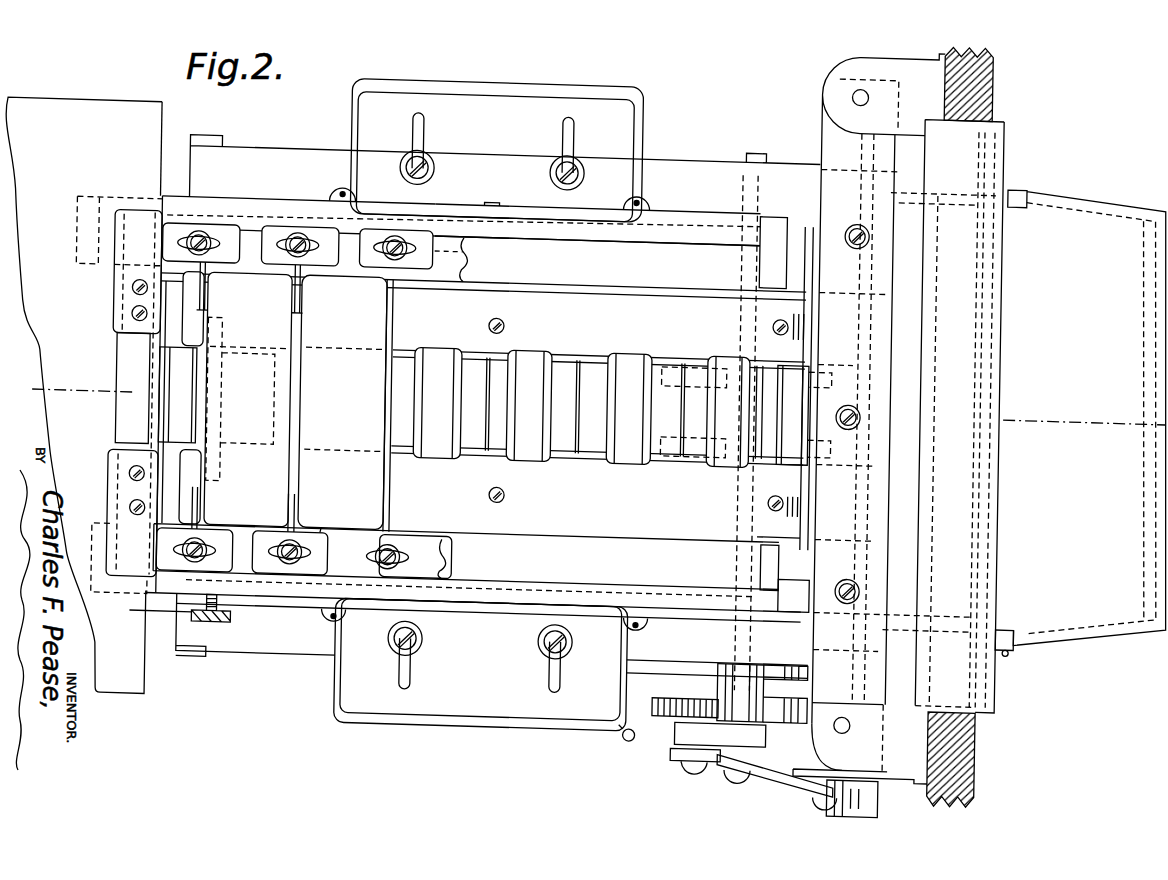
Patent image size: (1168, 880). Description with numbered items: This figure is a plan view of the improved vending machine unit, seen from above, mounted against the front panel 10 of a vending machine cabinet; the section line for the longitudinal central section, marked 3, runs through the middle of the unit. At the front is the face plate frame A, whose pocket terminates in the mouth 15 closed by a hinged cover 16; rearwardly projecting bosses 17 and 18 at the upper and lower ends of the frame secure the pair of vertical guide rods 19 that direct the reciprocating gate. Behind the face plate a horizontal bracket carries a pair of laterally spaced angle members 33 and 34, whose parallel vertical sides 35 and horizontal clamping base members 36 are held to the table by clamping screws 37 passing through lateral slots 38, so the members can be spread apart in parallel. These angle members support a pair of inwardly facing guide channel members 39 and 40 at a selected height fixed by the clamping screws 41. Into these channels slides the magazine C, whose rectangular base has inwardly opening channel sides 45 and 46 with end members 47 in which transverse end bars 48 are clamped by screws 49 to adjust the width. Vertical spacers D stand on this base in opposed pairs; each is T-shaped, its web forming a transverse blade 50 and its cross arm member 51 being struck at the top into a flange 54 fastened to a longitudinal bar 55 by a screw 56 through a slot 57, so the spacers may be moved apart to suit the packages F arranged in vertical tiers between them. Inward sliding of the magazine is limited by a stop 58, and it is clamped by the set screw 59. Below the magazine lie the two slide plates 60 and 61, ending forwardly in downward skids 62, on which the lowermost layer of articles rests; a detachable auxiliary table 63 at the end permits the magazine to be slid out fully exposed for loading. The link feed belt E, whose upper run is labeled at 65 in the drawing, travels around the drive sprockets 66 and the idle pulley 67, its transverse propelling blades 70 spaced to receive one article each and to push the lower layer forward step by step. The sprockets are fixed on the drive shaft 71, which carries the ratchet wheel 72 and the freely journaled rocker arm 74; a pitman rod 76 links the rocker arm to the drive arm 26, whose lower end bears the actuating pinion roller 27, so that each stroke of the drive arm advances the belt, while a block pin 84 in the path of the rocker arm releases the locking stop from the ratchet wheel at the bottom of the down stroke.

The front panel 10 is at (984, 733).
The mouth 15 is at (1090, 612).
The hinged cover 16 is at (1083, 420).
The bosses 17 is at (838, 54).
The bosses 18 is at (862, 738).
The guide rods 19 is at (848, 86).
The drive arm 26 is at (887, 769).
The actuating pinion roller 27 is at (835, 797).
The angle member 33 is at (467, 610).
The angle member 34 is at (480, 201).
The vertical sides 35 is at (703, 203).
The clamping base members 36 is at (489, 404).
The clamping screws 37 is at (434, 164).
The slots 38 is at (426, 126).
The guide channel member 39 is at (237, 605).
The guide channel member 40 is at (201, 209).
The clamping screws 41 is at (332, 192).
The channel side 45 is at (484, 249).
The channel side 46 is at (466, 561).
The end members 47 is at (112, 297).
The transverse end bars 48 is at (133, 388).
The clamping screws 49 is at (132, 300).
The blade 50 is at (206, 299).
The cross arm member 51 is at (461, 250).
The flange 54 is at (215, 232).
The longitudinal bar 55 is at (464, 263).
The screw 56 is at (395, 243).
The slot 57 is at (388, 240).
The stop 58 is at (804, 580).
The set screw 59 is at (167, 609).
The slide plate 60 is at (580, 357).
The slide plate 61 is at (645, 411).
The skids 62 is at (809, 281).
The auxiliary table 63 is at (82, 395).
The pressure bar 65 is at (410, 348).
The drive sprockets 66 is at (692, 358).
The idle pulley 67 is at (177, 380).
The propelling blades 70 is at (480, 443).
The drive shaft 71 is at (736, 507).
The ratchet wheel 72 is at (789, 672).
The rocker arm 74 is at (684, 732).
The pitman rod 76 is at (824, 770).
The block pin 84 is at (625, 730).
The face plate frame A is at (1005, 134).
The magazine C is at (118, 437).
The spacers D is at (319, 279).
The feed belt E is at (633, 358).
The packages F is at (342, 402).
The section line 3 is at (35, 380).